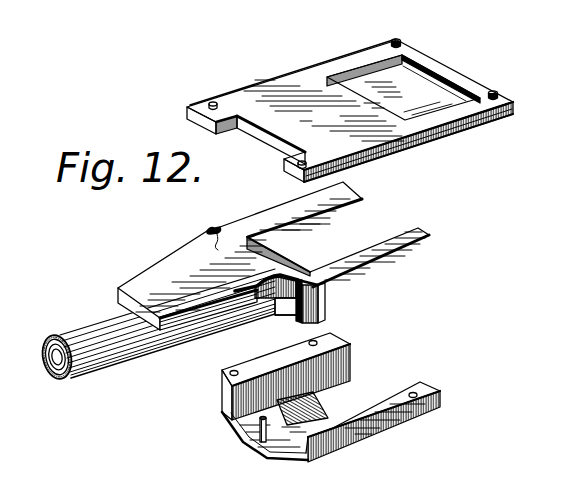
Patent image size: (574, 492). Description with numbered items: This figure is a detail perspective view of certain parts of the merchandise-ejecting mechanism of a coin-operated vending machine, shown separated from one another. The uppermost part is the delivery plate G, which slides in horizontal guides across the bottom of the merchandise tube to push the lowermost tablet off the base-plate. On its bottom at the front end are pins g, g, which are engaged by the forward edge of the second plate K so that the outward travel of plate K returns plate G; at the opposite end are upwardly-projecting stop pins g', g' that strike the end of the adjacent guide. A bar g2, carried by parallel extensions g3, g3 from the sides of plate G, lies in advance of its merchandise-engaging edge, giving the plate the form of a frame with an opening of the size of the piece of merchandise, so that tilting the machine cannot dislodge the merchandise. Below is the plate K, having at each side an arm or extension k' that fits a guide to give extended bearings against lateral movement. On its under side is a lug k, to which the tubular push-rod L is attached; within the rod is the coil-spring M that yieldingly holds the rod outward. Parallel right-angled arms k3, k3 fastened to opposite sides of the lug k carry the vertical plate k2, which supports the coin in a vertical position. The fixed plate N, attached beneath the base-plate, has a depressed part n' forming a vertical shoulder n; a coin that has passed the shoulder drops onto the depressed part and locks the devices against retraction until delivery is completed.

The plate G is at (350, 111).
The pins g is at (255, 124).
The upwardly-projecting pin g' is at (460, 54).
The bar g2 is at (450, 72).
The parallel extensions g3 is at (362, 57).
The second plate K is at (197, 276).
The lug k is at (266, 306).
The arm or extension k' is at (351, 233).
The vertical plate k2 is at (297, 251).
The right-angled arms k3 is at (320, 305).
The rod L is at (148, 346).
The coil-spring M is at (49, 368).
The fixed plate N is at (240, 431).
The vertical shoulder n is at (303, 405).
The depressed part n' is at (374, 419).
The pin on bracket i is at (258, 455).